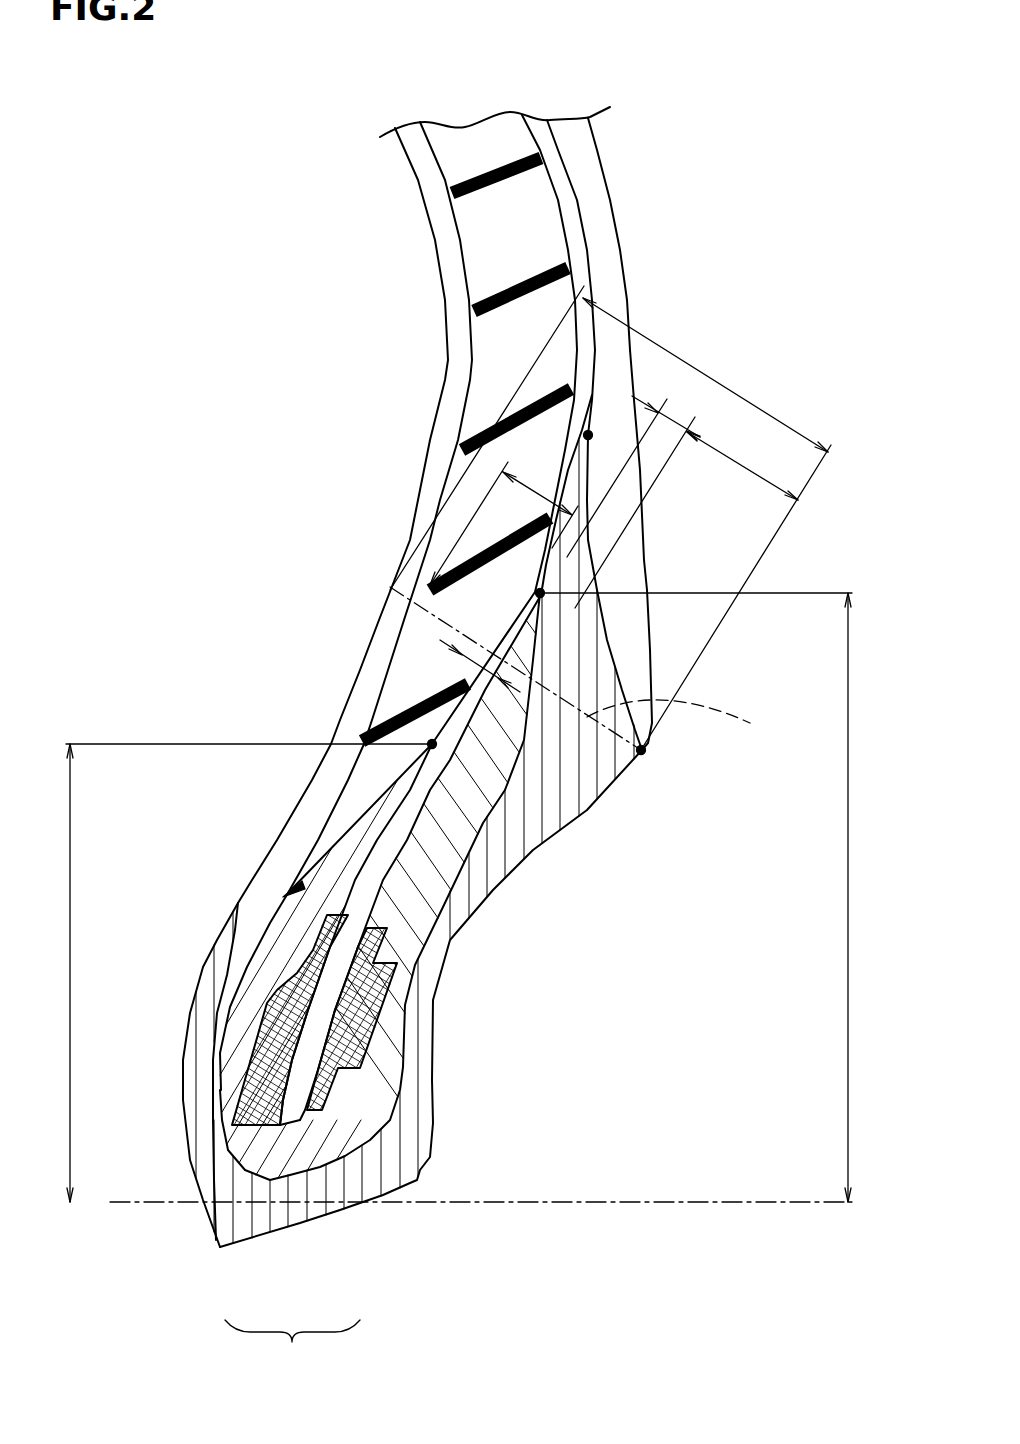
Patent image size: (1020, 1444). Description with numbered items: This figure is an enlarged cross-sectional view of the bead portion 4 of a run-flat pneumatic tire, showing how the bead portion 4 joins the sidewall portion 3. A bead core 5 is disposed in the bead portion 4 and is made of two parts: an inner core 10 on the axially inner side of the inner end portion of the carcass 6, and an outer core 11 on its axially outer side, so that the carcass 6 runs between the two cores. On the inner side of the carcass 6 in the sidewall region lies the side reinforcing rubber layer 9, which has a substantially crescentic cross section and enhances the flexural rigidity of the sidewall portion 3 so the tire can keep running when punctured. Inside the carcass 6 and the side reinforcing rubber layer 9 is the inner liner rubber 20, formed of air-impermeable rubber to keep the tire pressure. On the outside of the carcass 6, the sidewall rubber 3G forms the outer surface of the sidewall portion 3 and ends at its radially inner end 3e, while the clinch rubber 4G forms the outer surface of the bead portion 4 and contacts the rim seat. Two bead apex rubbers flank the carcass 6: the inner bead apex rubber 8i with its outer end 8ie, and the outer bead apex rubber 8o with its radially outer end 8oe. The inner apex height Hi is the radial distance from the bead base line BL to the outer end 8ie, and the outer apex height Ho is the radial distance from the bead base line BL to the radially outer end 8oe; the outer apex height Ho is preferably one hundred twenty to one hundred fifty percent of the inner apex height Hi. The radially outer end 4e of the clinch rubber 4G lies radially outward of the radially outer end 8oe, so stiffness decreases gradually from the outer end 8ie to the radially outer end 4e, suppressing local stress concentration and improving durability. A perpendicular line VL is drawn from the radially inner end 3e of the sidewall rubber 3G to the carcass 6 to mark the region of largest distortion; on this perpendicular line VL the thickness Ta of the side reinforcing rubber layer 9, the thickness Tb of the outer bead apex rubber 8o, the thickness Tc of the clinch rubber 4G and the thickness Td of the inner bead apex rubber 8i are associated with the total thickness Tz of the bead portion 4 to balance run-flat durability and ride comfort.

The sidewall portion 3 is at (637, 258).
The sidewall rubber 3G is at (598, 223).
The radially inner end of the sidewall rubber 3e is at (641, 750).
The bead portion 4 is at (550, 887).
The clinch rubber 4G is at (585, 775).
The radially outer end of the clinch rubber 4e is at (588, 435).
The bead core 5 is at (292, 1345).
The carcass 6 is at (558, 180).
The inner bead apex rubber 8i is at (342, 867).
The outer bead apex rubber 8o is at (430, 855).
The outer end of the inner bead apex rubber 8ie is at (455, 660).
The radially outer end of the outer bead apex rubber 8oe is at (540, 593).
The side reinforcing rubber layer 9 is at (492, 240).
The inner core 10 is at (248, 1103).
The outer core 11 is at (355, 1047).
The inner liner rubber 20 is at (345, 724).
The perpendicular line VL is at (690, 722).
The bead base line BL is at (607, 1207).
The inner apex height Hi is at (233, 973).
The outer apex height Ho is at (718, 897).
The thickness of the side reinforcing rubber layer Ta is at (504, 521).
The thickness of the outer bead apex rubber Tb is at (635, 498).
The thickness of the clinch rubber Tc is at (742, 466).
The thickness of the inner bead apex rubber Td is at (477, 667).
The thickness of the bead portion Tz is at (610, 518).